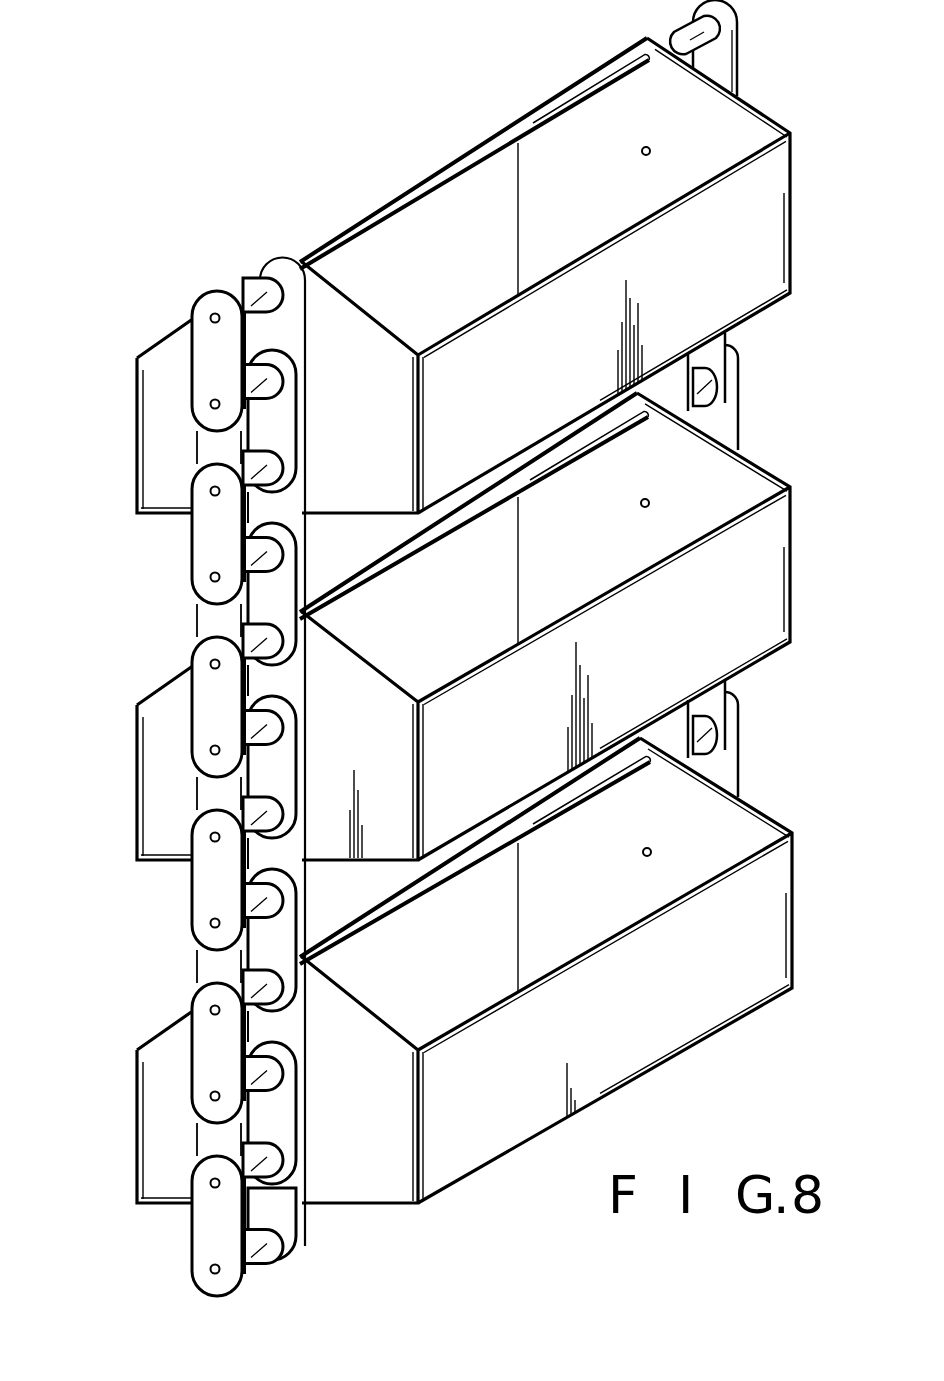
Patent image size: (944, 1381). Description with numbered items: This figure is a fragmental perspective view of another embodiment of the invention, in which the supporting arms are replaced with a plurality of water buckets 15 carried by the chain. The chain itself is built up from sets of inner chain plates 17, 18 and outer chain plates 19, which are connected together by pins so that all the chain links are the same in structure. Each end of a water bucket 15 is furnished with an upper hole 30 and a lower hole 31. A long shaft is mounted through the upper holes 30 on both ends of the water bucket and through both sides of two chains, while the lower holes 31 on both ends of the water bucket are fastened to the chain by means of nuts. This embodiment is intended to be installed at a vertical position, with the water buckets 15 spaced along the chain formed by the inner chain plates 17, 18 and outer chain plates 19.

The water bucket 15 is at (782, 232).
The inner chain plate 17 is at (210, 798).
The inner chain plate 18 is at (207, 963).
The outer chain plate 19 is at (200, 890).
The upper hole 30 is at (645, 62).
The lower hole 31 is at (652, 151).